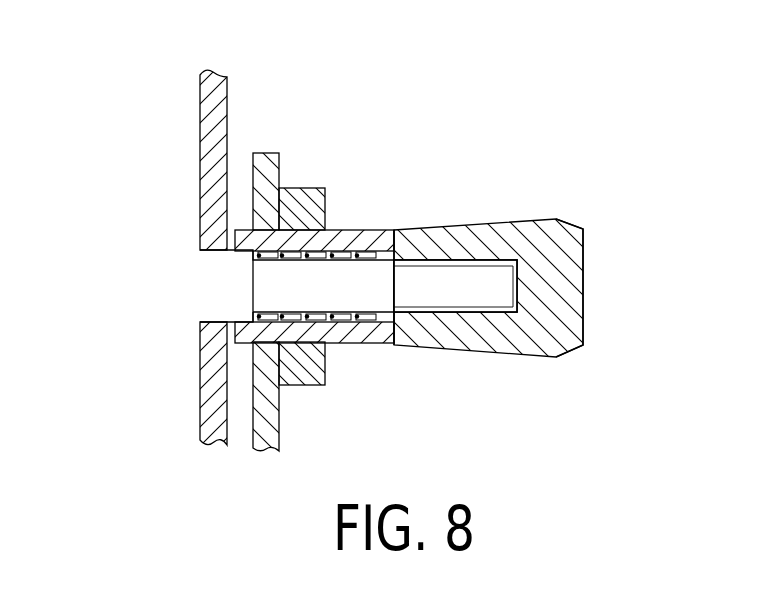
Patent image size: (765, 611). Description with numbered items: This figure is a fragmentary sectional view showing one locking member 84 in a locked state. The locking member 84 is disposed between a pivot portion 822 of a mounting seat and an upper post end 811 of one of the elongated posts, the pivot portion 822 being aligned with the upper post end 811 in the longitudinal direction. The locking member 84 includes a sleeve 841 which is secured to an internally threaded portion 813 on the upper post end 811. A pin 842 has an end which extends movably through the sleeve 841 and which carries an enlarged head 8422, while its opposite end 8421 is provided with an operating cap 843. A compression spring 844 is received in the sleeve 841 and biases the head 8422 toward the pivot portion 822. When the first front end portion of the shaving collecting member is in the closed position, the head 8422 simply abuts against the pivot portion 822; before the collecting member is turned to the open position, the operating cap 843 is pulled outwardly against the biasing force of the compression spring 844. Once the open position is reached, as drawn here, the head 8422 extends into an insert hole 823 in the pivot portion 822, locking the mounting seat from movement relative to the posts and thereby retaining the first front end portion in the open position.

The locking member 84 is at (434, 257).
The upper post end 811 is at (265, 152).
The internally threaded portion 813 is at (293, 188).
The pivot portion 822 is at (213, 123).
The insert hole 823 is at (212, 235).
The sleeve 841 is at (375, 233).
The pin 842 is at (395, 232).
The operating cap 843 is at (528, 227).
The compression spring 844 is at (333, 249).
The opposite end 8421 is at (495, 288).
The enlarged head 8422 is at (230, 304).